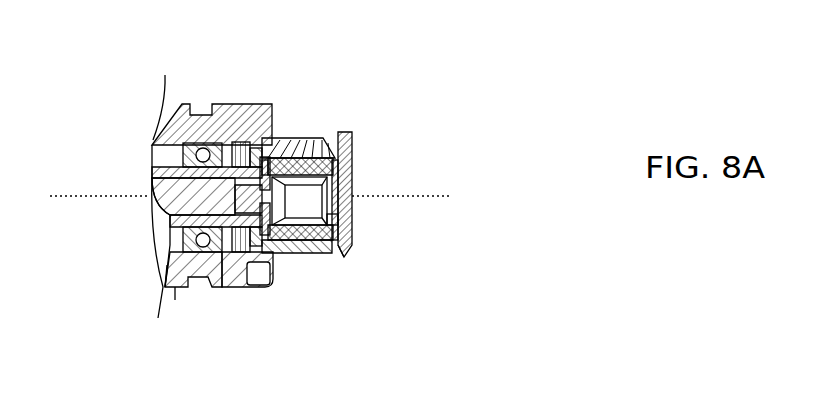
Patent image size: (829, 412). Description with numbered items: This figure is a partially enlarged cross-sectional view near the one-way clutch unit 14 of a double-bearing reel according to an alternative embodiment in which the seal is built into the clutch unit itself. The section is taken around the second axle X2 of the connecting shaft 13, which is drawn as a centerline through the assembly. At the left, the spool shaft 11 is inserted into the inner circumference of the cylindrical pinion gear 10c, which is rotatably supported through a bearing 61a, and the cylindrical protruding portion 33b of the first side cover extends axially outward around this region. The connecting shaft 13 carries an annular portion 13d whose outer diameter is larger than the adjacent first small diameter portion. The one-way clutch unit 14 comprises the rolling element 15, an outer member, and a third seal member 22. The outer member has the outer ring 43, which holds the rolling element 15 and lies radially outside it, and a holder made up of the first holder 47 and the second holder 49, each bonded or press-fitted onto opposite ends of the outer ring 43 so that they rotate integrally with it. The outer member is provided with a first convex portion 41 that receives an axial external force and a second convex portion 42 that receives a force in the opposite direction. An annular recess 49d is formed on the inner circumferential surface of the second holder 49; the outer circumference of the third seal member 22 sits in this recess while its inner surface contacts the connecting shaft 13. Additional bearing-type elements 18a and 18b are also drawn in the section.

The pinion gear 10c is at (153, 145).
The spool shaft 11 is at (167, 152).
The connecting shaft 13 is at (309, 137).
The annular portion 13d is at (210, 104).
The one-way clutch unit 14 is at (281, 138).
The rolling element 15 is at (349, 167).
The bearing 18a is at (354, 248).
The bearing 18b is at (216, 288).
The third seal member 22 is at (348, 221).
The protruding portion 33b is at (167, 265).
The first convex portion 41 is at (349, 187).
The second convex portion 42 is at (241, 104).
The outer ring 43 is at (349, 137).
The first holder 47 is at (317, 253).
The second holder 49 is at (285, 253).
The annular recess 49d is at (272, 240).
The bearing 61a is at (175, 300).
The second axle X2 is at (250, 195).